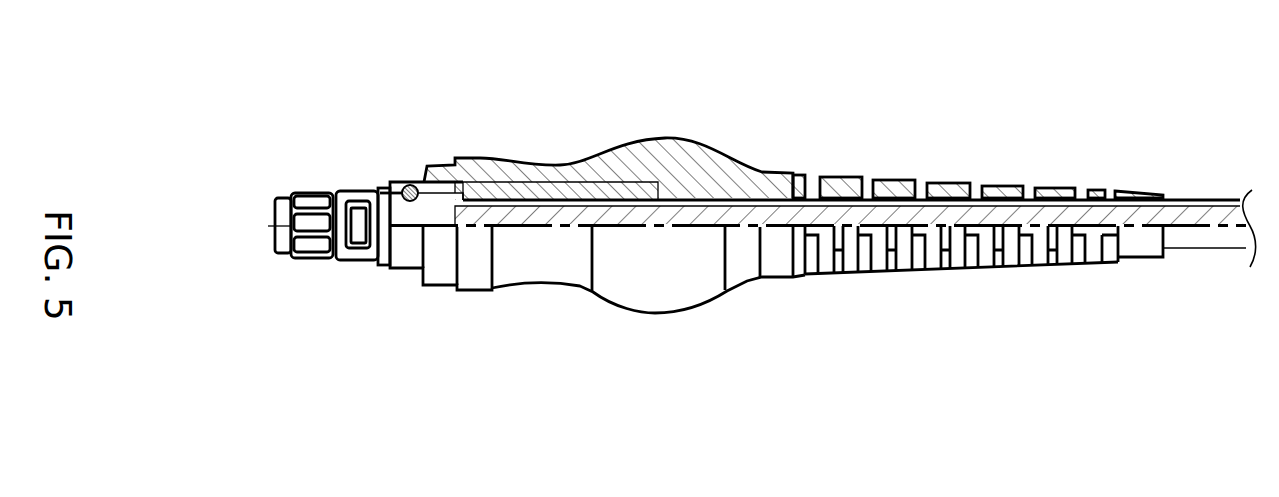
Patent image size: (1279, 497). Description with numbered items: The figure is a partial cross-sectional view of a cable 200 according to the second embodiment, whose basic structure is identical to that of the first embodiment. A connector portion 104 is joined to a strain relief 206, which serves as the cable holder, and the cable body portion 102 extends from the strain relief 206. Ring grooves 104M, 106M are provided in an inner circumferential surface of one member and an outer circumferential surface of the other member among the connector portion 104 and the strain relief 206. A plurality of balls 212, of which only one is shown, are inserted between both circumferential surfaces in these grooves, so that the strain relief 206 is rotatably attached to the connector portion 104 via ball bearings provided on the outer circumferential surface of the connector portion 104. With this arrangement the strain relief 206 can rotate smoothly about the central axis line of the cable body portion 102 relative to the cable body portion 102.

The cable 200 is at (1208, 462).
The cable body portion 102 is at (1070, 223).
The connector portion 104 is at (408, 258).
The ring groove 104M is at (420, 202).
The ring groove 106M is at (416, 181).
The strain relief 206 is at (667, 138).
The balls 212 is at (408, 181).